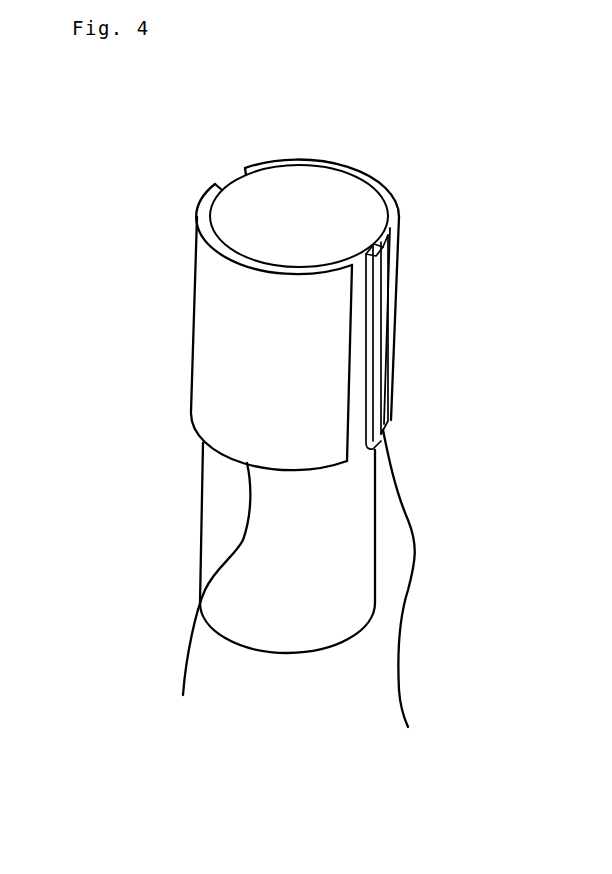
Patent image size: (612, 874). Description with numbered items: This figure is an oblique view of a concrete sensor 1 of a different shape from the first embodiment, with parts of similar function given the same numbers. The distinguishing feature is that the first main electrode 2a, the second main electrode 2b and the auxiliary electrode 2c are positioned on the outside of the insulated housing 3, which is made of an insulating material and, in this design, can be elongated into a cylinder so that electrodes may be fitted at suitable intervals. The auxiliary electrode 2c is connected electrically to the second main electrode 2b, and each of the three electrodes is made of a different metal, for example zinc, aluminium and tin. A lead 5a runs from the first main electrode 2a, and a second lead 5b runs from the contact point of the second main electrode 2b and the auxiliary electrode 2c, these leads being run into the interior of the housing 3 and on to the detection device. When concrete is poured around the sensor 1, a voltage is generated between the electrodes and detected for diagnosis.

The concrete sensor 1 is at (199, 145).
The first main electrode 2a is at (199, 343).
The second main electrode 2b is at (391, 203).
The auxiliary electrode 2c is at (381, 327).
The housing 3 is at (203, 502).
The lead 5a is at (214, 574).
The second lead 5b is at (402, 510).